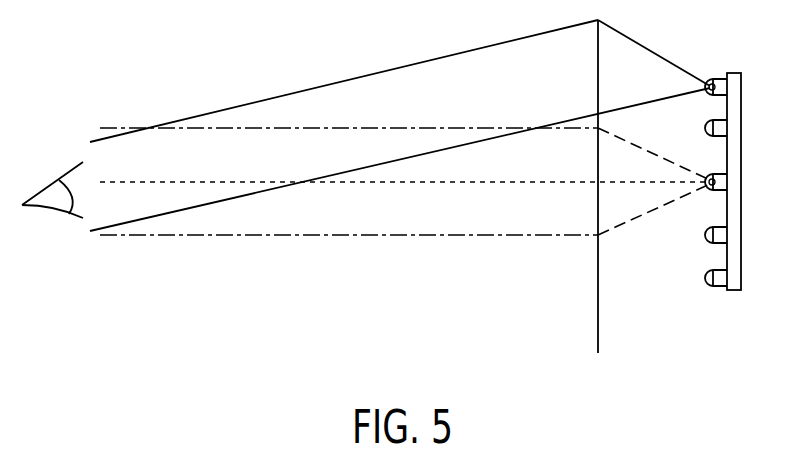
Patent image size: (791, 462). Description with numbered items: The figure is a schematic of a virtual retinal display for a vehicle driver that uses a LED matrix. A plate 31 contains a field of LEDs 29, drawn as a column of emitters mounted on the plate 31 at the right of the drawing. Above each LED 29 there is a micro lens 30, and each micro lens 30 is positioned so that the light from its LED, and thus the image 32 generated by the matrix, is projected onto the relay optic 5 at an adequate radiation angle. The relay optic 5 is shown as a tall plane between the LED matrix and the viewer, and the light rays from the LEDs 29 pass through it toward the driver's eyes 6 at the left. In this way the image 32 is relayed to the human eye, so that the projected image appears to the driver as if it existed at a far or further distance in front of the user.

The relay optic 5 is at (598, 52).
The driver's eyes 6 is at (67, 192).
The LEDs 29 is at (721, 91).
The micro lens 30 is at (709, 83).
The plate 31 is at (733, 73).
The image 32 is at (714, 298).